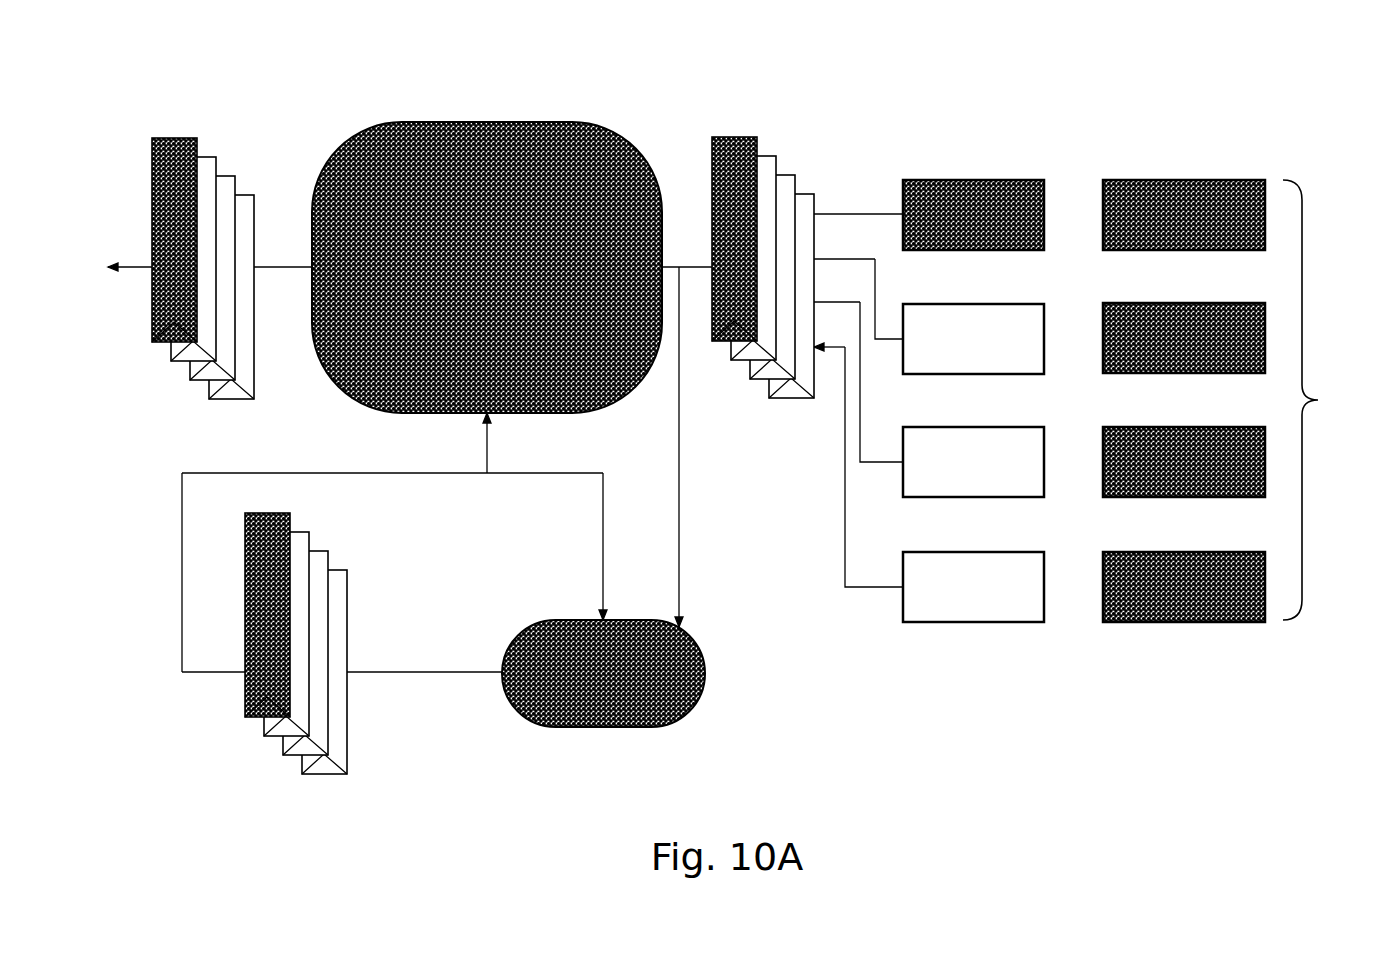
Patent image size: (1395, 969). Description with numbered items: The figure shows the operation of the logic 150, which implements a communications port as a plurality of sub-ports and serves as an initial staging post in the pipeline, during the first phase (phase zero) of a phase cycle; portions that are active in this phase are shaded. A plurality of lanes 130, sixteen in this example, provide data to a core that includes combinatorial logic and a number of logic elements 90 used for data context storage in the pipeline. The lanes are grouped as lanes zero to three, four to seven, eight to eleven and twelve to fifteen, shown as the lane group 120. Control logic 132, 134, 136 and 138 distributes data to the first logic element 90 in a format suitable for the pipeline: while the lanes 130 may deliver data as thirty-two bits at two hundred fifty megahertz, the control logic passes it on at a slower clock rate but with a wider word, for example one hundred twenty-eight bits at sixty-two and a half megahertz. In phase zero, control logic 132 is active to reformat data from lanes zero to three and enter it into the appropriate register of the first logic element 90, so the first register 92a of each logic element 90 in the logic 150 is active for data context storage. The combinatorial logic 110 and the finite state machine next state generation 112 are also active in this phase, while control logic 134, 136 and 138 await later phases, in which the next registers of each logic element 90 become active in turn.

The logic 150 is at (194, 70).
The logic element 90 is at (236, 160).
The first register 92a is at (165, 178).
The combinatorial logic 110 is at (459, 285).
The finite state machine next state generation 112 is at (575, 691).
The lane group 120 is at (1138, 146).
The lanes 130 is at (1335, 400).
The control logic 132 is at (945, 232).
The control logic 134 is at (945, 356).
The control logic 136 is at (945, 479).
The control logic 138 is at (945, 604).